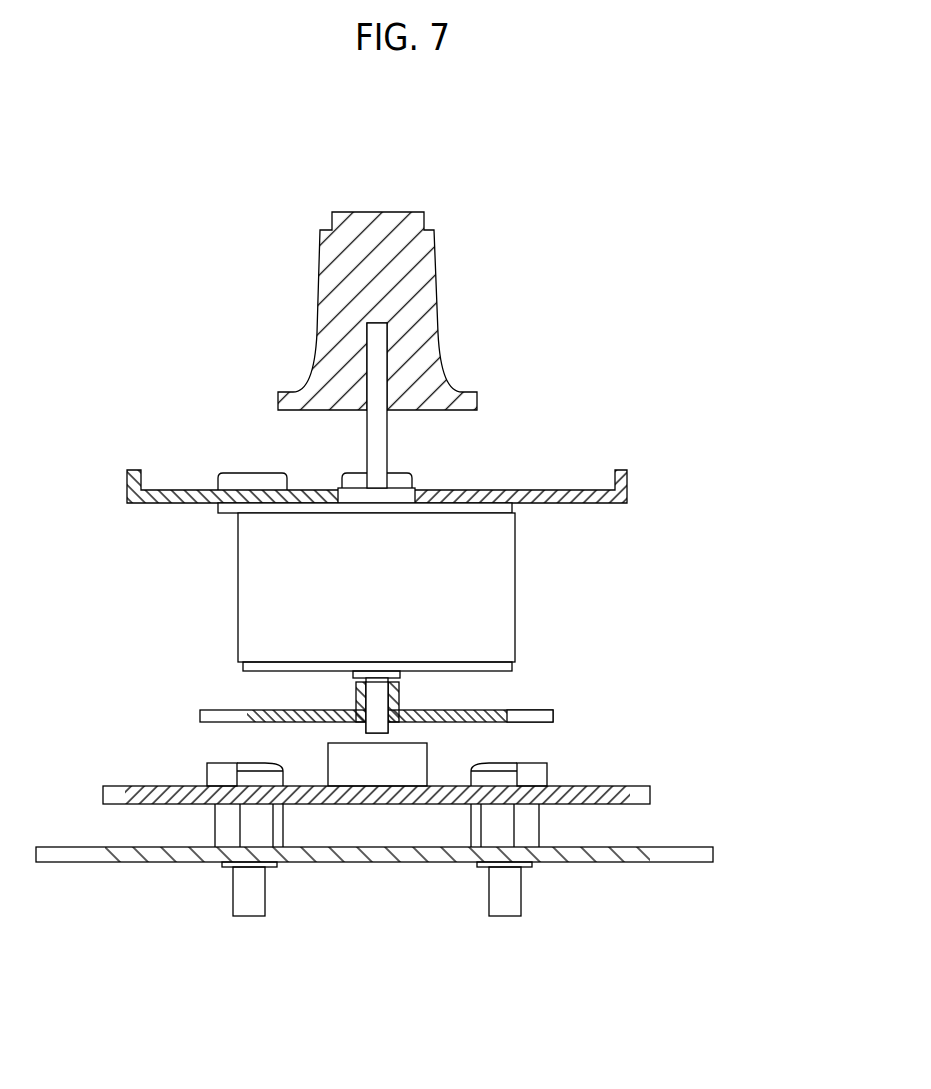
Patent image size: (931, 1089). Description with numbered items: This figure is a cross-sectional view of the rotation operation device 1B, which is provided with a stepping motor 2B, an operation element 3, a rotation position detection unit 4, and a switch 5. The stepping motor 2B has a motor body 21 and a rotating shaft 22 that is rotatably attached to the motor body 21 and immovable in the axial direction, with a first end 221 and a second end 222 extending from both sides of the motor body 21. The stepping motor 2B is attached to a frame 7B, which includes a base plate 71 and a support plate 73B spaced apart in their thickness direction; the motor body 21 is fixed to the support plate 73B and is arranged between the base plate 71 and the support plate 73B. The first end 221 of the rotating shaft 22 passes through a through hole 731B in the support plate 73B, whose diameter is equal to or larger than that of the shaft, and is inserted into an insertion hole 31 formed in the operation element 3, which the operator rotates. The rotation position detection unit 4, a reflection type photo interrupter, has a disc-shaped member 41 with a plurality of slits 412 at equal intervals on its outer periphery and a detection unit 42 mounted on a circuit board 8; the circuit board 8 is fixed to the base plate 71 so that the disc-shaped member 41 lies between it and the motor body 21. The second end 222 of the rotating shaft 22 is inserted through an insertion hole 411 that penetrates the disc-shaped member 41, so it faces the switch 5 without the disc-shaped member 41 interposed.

The rotation operation device 1B is at (498, 183).
The operation element 3 is at (436, 247).
The insertion hole 31 is at (392, 346).
The first end 221 is at (372, 343).
The rotating shaft 22 is at (275, 528).
The second end 222 is at (374, 694).
The frame 7B is at (421, 437).
The support plate 73B is at (627, 478).
The through hole 731B is at (420, 491).
The stepping motor 2B is at (364, 528).
The motor body 21 is at (502, 590).
The rotation position detection unit 4 is at (377, 700).
The disc-shaped member 41 is at (200, 716).
The insertion hole 411 is at (400, 702).
The slits 412 is at (547, 710).
The detection unit 42 is at (207, 775).
The switch 5 is at (378, 765).
The circuit board 8 is at (650, 795).
The base plate 71 is at (713, 855).